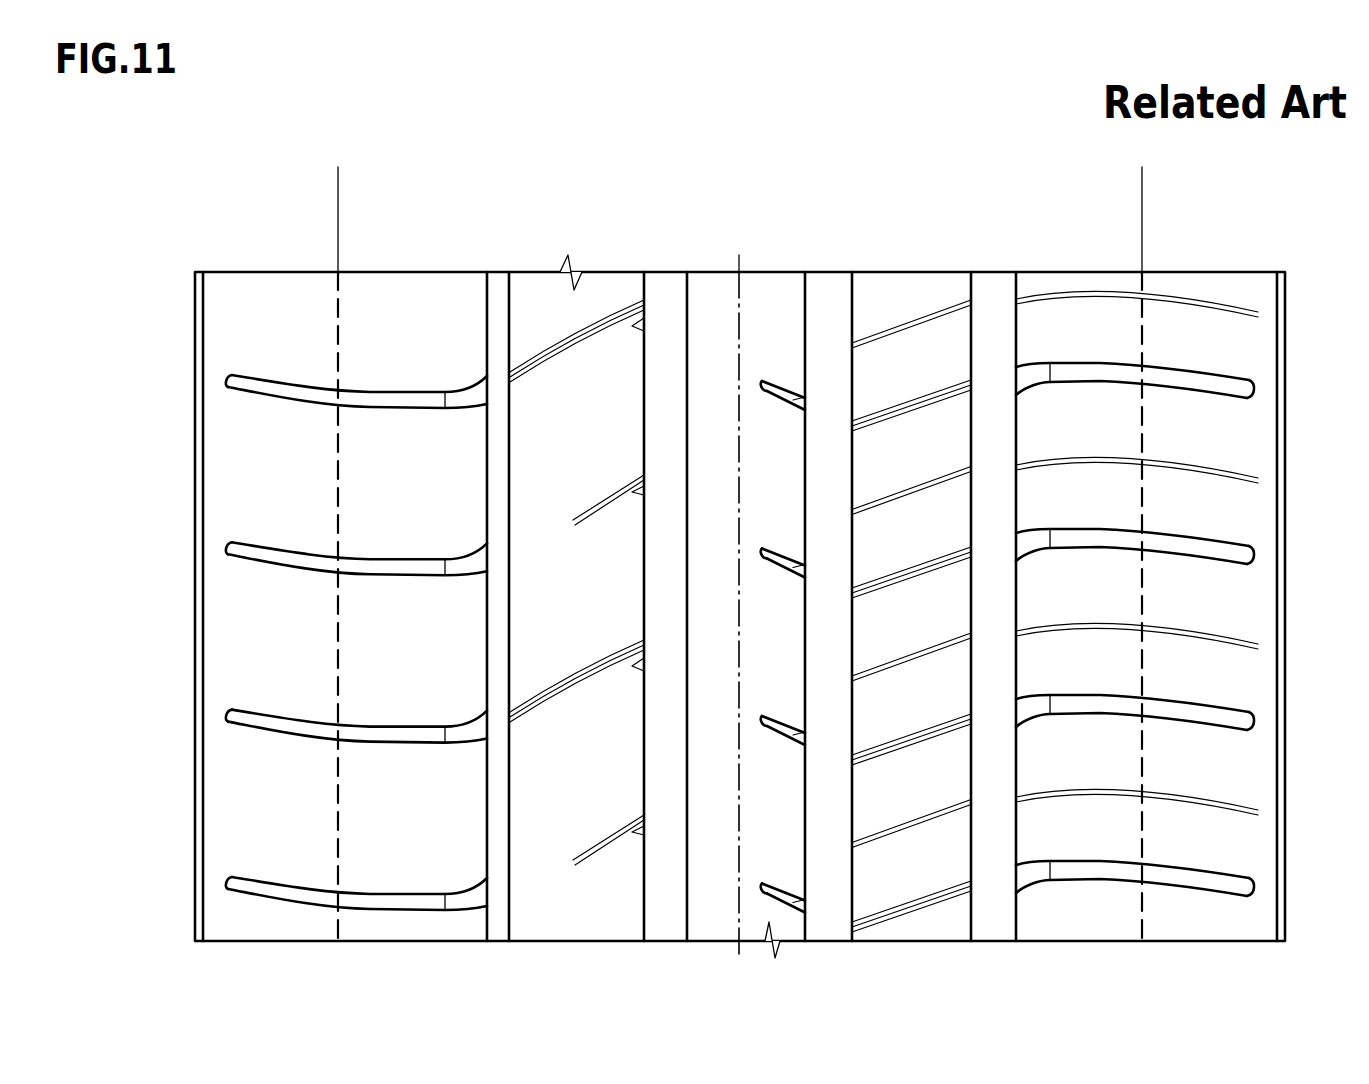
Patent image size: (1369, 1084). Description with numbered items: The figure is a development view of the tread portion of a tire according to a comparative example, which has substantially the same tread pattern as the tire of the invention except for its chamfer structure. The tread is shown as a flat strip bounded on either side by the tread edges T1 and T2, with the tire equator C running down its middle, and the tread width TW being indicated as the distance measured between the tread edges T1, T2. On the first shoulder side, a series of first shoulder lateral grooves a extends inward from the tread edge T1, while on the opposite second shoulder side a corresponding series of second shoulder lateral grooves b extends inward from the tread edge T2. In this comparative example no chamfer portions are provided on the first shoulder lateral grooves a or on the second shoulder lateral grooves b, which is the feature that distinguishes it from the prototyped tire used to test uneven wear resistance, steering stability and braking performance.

The first shoulder lateral grooves a is at (372, 391).
The second shoulder lateral grooves b is at (1116, 362).
The first tread edge T1 is at (338, 303).
The second tread edge T2 is at (1142, 318).
The tire equator C is at (740, 591).
The tread width TW is at (1142, 167).